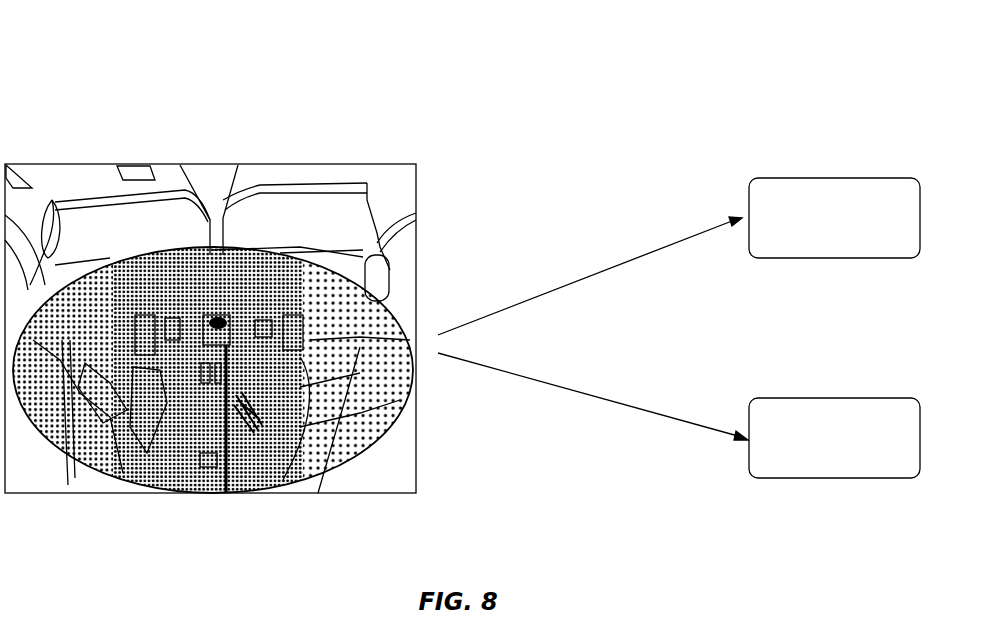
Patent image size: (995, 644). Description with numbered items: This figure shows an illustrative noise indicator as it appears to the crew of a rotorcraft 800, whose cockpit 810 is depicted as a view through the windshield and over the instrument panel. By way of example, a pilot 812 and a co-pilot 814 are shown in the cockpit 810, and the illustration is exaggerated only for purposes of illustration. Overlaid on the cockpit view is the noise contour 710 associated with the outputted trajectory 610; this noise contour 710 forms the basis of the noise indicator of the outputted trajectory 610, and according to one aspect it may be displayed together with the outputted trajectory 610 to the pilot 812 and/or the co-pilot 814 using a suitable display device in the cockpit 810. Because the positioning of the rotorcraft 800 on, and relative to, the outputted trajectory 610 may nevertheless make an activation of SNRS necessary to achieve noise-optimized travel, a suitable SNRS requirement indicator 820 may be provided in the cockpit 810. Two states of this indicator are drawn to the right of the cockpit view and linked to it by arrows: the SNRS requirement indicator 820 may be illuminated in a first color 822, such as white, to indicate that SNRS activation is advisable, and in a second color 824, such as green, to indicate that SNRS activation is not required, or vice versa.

The rotorcraft 800 is at (260, 107).
The cockpit 810 is at (175, 233).
The pilot 812 is at (367, 183).
The co-pilot 814 is at (52, 200).
The noise contour 710 is at (80, 463).
The outputted trajectory 610 is at (212, 480).
The SNRS requirement indicator 820 is at (835, 178).
The first color 822 is at (767, 242).
The second color 824 is at (767, 462).